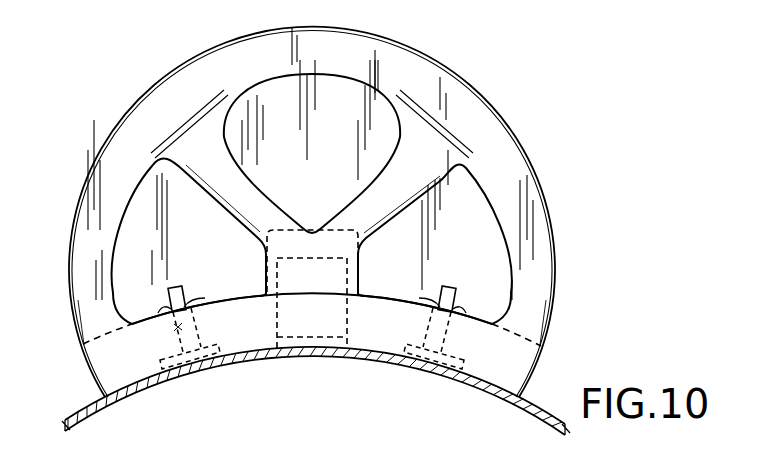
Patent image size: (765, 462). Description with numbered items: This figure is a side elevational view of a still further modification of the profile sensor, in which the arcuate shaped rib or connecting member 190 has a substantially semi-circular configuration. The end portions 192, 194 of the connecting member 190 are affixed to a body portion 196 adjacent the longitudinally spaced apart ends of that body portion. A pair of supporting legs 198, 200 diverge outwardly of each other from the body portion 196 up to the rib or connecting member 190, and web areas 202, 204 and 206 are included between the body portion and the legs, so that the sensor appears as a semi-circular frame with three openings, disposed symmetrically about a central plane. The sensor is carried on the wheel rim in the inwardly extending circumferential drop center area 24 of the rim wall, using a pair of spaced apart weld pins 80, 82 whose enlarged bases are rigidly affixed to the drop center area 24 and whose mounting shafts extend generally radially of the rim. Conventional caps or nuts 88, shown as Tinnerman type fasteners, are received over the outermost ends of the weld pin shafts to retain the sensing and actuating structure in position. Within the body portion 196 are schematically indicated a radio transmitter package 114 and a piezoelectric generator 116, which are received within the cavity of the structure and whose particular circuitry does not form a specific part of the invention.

The arcuate shaped rib or connecting member 190 is at (347, 40).
The end portion of connecting member 192 is at (528, 305).
The end portion of connecting member 194 is at (97, 305).
The body portion 196 is at (392, 323).
The supporting leg 198 is at (421, 152).
The supporting leg 200 is at (205, 152).
The web area 202 is at (486, 246).
The web area 204 is at (352, 188).
The web area 206 is at (208, 239).
The cap or nut 88 is at (193, 298).
The weld pin 82 is at (185, 333).
The weld pin 80 is at (457, 317).
The radio transmitter package 114 is at (288, 313).
The piezoelectric generator 116 is at (333, 340).
The drop center area 24 is at (372, 353).